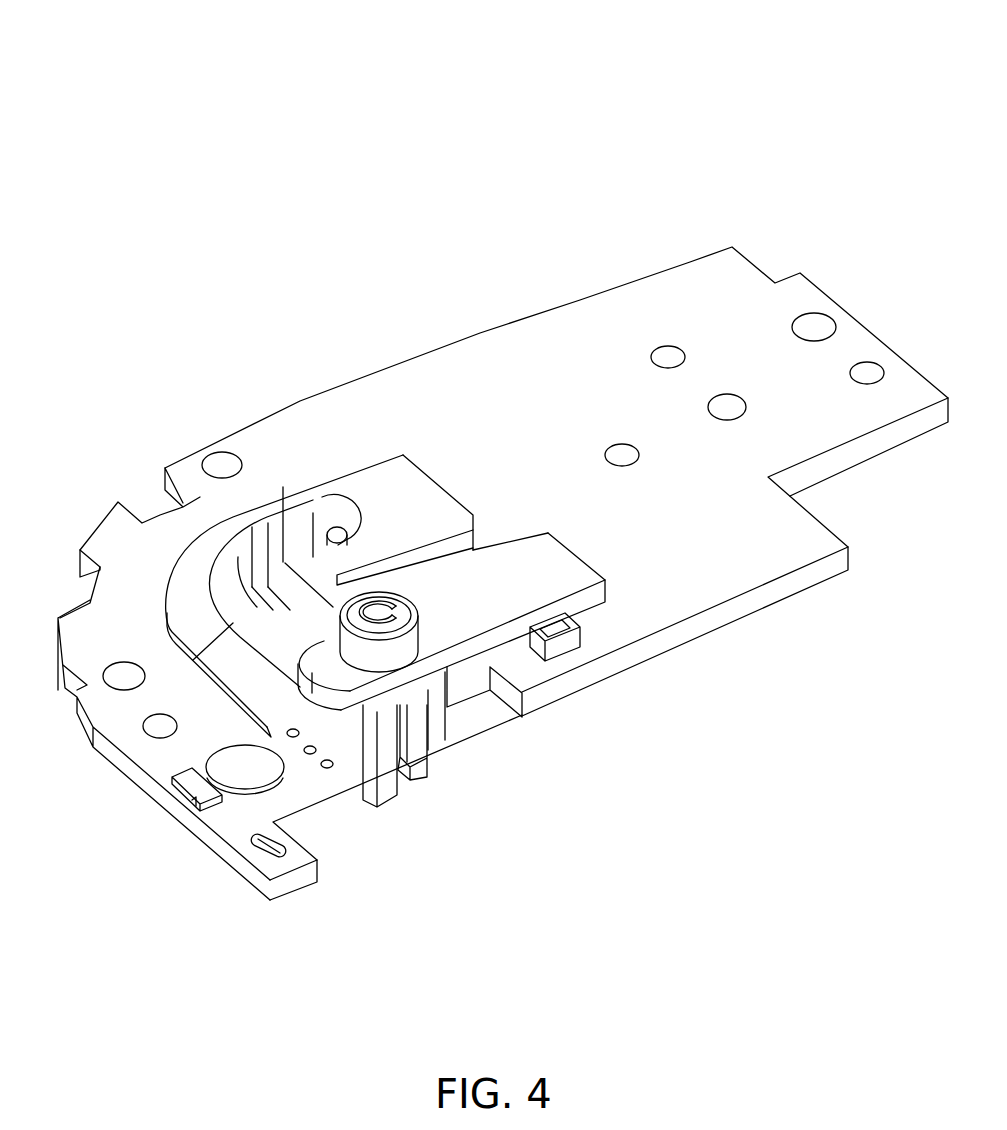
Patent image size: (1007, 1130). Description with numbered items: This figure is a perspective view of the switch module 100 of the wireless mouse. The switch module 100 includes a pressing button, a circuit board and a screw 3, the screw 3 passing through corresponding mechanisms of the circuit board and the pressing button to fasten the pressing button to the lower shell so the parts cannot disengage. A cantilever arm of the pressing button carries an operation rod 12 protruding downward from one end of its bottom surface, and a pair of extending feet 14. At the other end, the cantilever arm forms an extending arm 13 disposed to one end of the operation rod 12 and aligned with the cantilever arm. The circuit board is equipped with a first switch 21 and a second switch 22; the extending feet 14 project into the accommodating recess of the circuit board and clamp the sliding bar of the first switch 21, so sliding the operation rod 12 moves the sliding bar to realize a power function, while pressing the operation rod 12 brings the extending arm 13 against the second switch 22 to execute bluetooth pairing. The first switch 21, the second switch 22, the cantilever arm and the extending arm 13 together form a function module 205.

The switch module 100 is at (100, 36).
The screw 3 is at (333, 530).
The extending arm 13 is at (455, 610).
The operation rod 12 is at (397, 655).
The second switch 22 is at (558, 647).
The extending feet 14 is at (392, 795).
The first switch 21 is at (413, 768).
The function module 205 is at (560, 760).